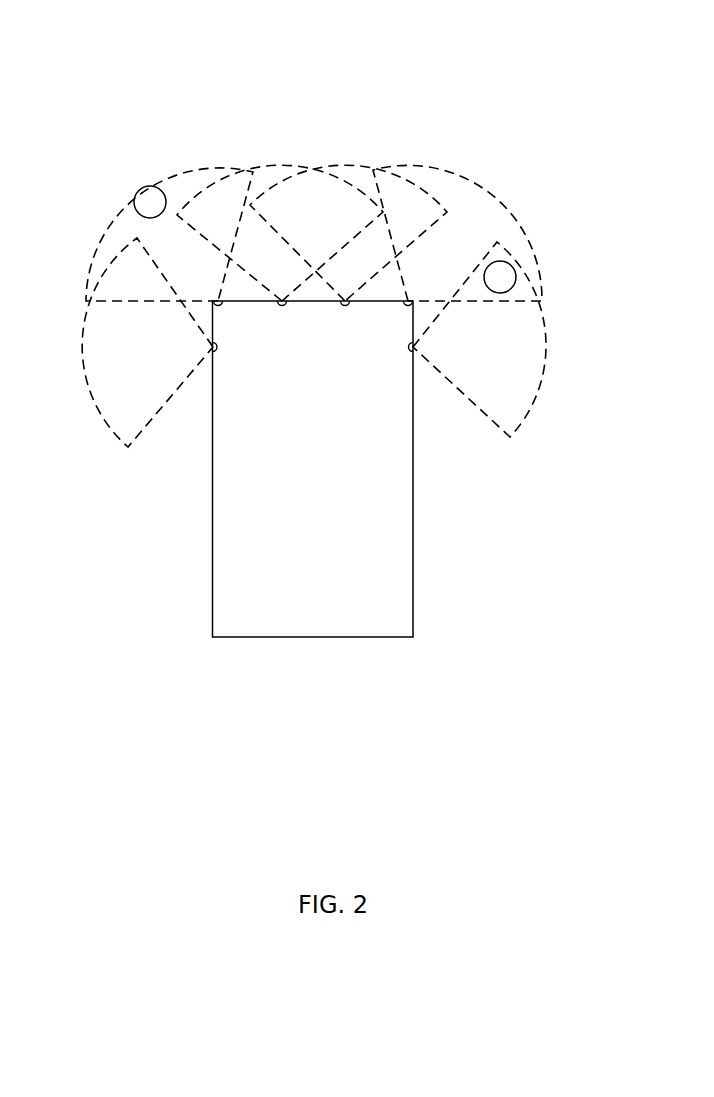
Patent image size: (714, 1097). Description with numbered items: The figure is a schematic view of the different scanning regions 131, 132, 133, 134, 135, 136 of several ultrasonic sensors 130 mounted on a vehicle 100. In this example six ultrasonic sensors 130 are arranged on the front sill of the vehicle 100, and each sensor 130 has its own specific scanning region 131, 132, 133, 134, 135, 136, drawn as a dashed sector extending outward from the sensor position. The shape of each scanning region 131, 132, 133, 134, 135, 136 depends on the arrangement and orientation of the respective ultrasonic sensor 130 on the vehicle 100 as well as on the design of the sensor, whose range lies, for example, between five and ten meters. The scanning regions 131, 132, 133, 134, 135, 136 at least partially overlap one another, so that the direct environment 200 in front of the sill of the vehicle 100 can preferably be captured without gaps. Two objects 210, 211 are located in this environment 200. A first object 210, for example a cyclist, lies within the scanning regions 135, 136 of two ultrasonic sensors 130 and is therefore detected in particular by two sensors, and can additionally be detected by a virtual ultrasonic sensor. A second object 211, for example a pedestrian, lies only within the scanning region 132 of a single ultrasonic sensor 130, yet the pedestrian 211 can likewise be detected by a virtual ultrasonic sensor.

The environment 200 is at (356, 31).
The vehicle 100 is at (308, 638).
The ultrasonic sensor 130 is at (343, 343).
The scanning region 131 is at (158, 346).
The scanning region 132 is at (211, 279).
The scanning region 133 is at (296, 276).
The scanning region 134 is at (378, 276).
The scanning region 135 is at (458, 273).
The scanning region 136 is at (509, 341).
The first object 210 is at (516, 279).
The second object 211 is at (134, 202).